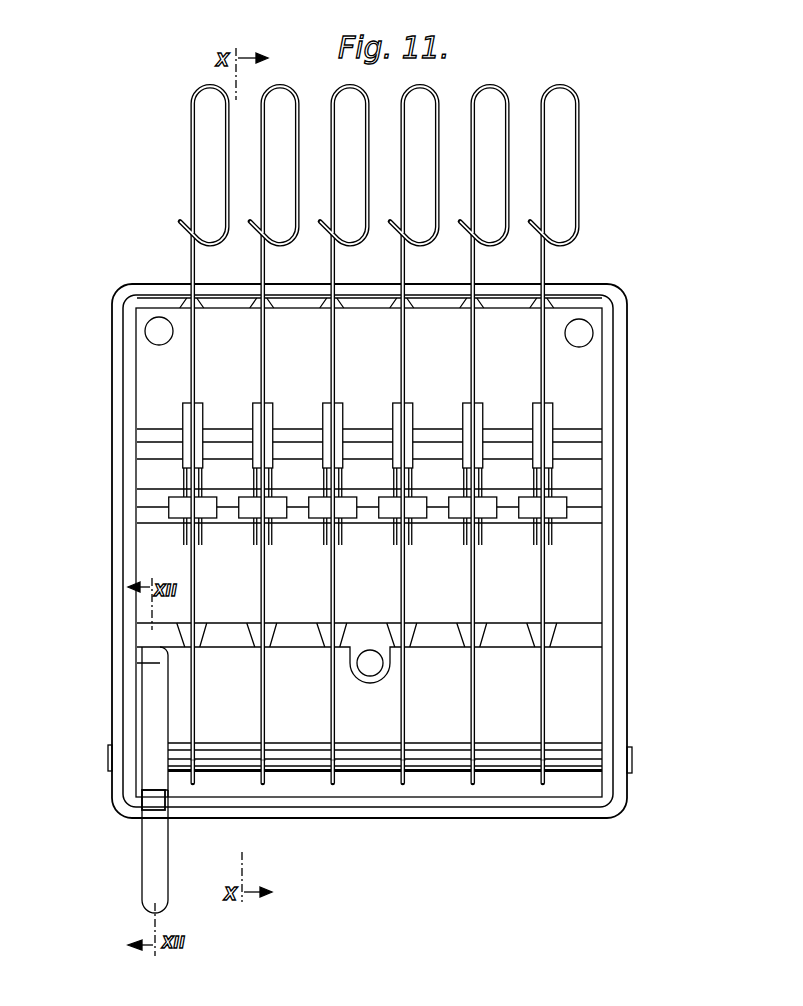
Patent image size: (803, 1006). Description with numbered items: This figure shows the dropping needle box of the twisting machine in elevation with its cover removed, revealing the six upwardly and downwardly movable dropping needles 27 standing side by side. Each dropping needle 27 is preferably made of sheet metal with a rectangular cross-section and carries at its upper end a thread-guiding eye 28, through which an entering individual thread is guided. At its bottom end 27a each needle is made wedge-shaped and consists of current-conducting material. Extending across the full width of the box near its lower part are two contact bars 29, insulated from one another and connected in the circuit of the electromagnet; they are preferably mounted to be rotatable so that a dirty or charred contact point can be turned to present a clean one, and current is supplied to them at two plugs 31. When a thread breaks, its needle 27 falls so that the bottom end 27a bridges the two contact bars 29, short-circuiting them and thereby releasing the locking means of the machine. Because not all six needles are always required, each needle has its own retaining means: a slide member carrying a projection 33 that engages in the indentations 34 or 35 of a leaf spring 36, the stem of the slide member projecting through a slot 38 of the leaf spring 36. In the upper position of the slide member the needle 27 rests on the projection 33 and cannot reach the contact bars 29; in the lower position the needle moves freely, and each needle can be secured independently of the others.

The dropping needle 27 is at (190, 267).
The bottom end 27a is at (193, 753).
The thread-guiding eye 28 is at (541, 100).
The contact bar 29 is at (372, 757).
The plug 31 is at (152, 852).
The projection 33 is at (168, 510).
The indentation 34 is at (148, 435).
The indentation 35 is at (143, 498).
The leaf spring 36 is at (153, 366).
The slot 38 is at (553, 458).